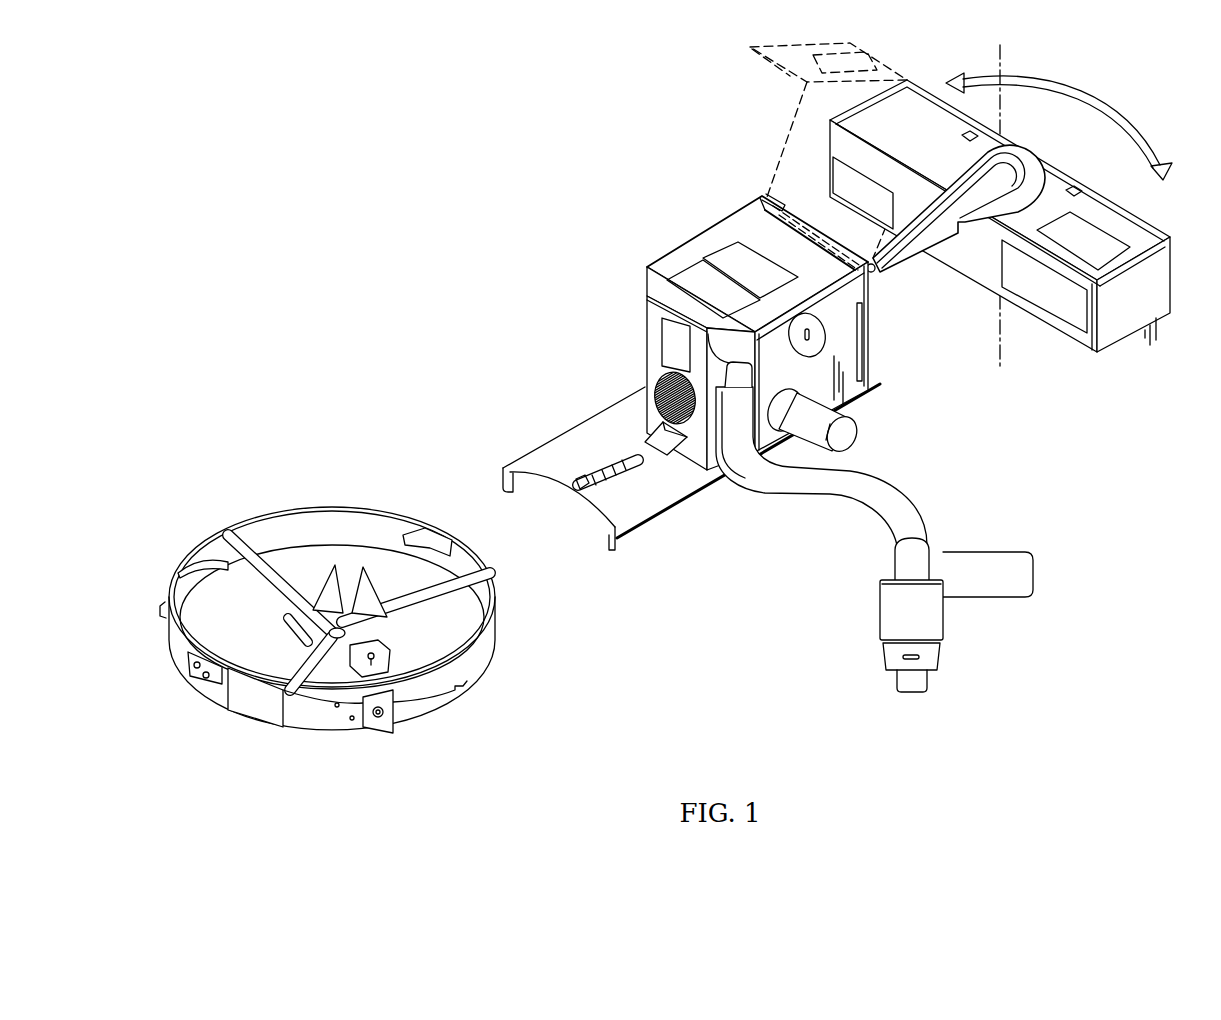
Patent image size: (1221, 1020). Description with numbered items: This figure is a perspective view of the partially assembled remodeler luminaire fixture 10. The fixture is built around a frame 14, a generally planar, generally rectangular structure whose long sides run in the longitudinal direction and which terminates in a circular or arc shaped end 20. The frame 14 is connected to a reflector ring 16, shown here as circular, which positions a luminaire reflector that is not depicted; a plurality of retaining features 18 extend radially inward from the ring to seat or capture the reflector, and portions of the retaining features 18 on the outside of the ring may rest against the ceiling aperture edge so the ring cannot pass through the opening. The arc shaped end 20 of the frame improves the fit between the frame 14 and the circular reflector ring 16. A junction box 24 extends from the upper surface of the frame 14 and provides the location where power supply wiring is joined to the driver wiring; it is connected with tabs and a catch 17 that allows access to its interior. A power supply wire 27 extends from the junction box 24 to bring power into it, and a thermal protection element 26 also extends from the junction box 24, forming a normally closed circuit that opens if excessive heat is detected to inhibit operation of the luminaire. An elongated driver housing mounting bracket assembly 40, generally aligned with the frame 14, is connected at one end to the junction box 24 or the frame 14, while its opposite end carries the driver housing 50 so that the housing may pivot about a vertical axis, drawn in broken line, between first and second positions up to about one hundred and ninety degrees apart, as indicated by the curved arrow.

The remodeler luminaire fixture 10 is at (408, 176).
The frame 14 is at (553, 408).
The reflector ring 16 is at (327, 574).
The catch 17 is at (652, 435).
The retaining features 18 is at (404, 514).
The arc shaped end 20 is at (584, 529).
The junction box 24 is at (680, 228).
The thermal protection element 26 is at (866, 441).
The power supply wire 27 is at (793, 488).
The driver housing mounting bracket assembly 40 is at (918, 276).
The driver housing 50 is at (1139, 364).